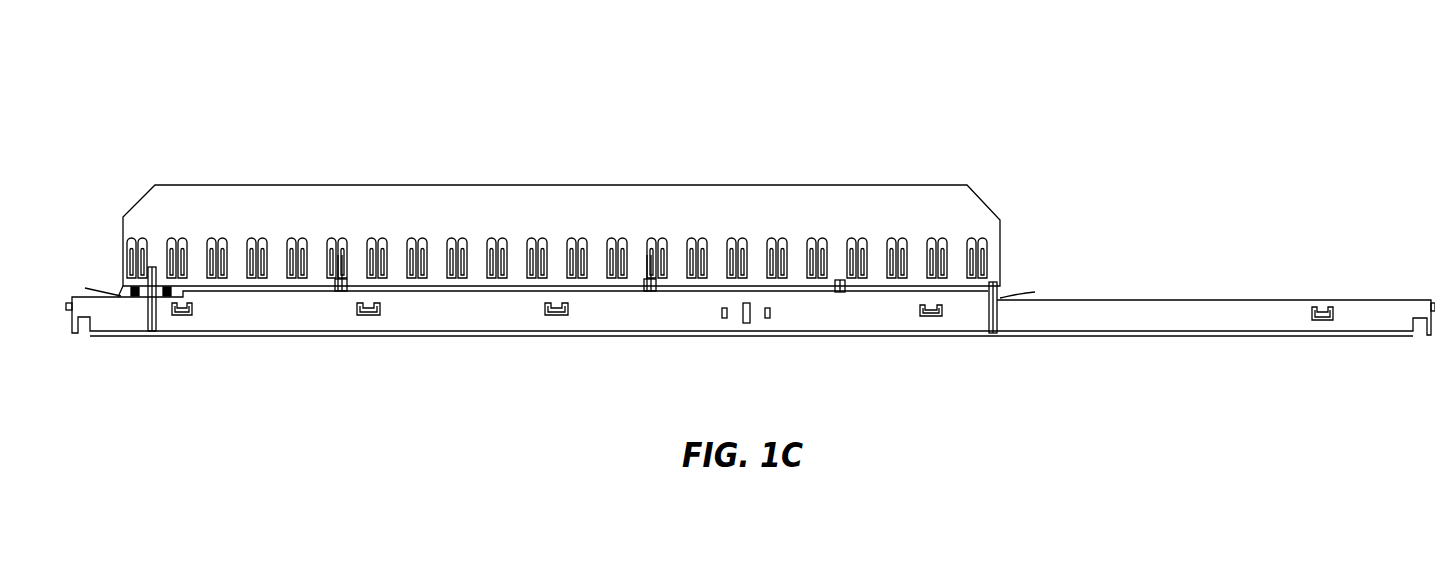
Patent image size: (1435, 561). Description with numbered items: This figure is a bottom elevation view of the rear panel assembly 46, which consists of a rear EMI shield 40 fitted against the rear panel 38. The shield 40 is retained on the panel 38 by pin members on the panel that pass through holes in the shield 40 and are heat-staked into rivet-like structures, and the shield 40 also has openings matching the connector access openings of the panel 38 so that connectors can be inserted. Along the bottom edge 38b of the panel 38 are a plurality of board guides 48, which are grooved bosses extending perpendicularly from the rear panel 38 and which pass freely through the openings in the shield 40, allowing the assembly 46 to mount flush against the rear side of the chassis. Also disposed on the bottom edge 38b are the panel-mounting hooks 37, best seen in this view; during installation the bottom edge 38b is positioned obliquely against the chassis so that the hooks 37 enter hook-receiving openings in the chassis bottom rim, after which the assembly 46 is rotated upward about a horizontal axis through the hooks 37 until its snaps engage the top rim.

The rear panel assembly 46 is at (581, 77).
The rear EMI shield 40 is at (237, 208).
The board guides 48 is at (344, 262).
The rear panel 38 is at (1268, 300).
The bottom edge 38b is at (1185, 320).
The panel-mounting hooks 37 is at (183, 315).